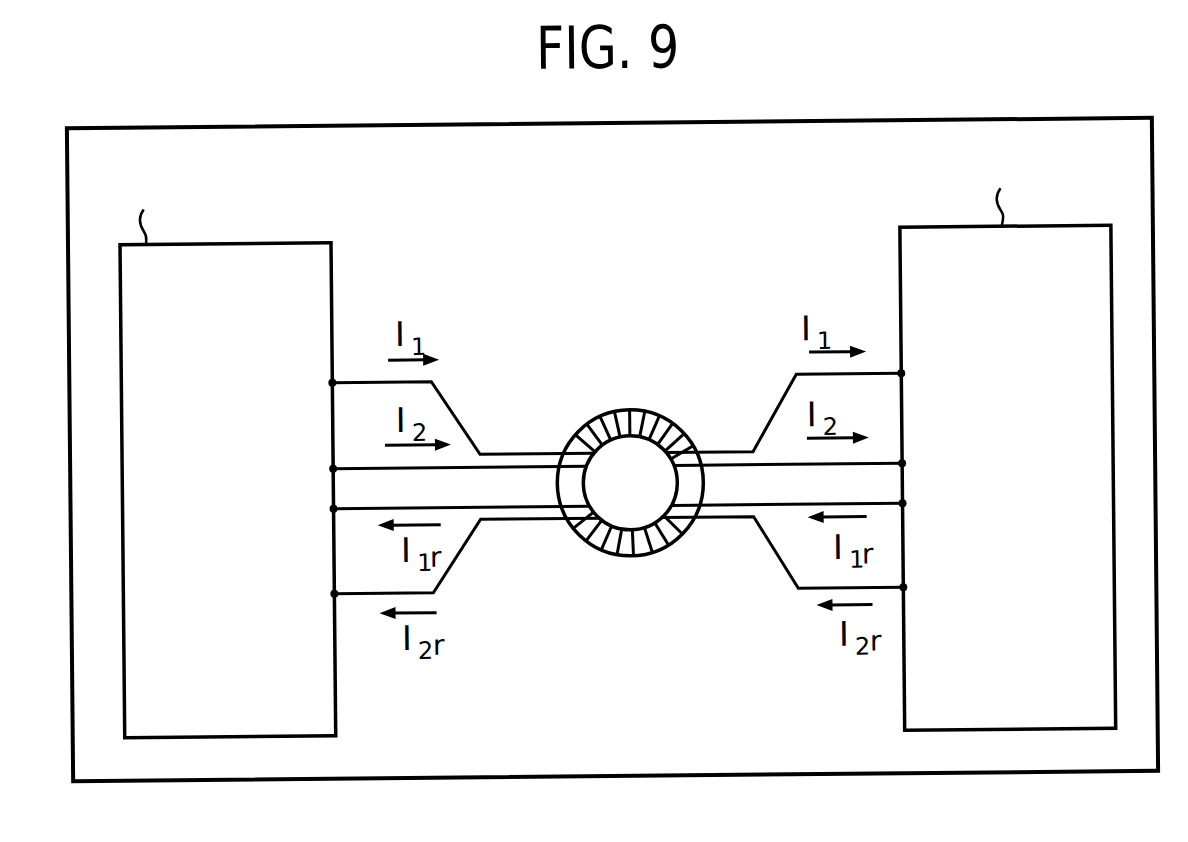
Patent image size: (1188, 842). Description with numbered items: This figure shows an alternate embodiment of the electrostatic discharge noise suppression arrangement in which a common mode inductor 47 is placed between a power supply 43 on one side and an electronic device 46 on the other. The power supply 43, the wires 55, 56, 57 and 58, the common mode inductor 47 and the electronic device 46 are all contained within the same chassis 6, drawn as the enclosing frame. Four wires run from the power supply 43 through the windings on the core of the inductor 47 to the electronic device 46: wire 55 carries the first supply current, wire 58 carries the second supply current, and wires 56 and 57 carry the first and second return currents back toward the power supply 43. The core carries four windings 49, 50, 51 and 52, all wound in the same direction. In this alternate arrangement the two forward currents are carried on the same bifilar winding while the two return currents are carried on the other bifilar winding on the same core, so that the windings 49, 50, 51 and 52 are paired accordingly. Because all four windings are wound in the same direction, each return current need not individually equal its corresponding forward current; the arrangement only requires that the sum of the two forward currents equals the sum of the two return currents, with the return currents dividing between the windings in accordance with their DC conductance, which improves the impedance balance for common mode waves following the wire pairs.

The chassis 6 is at (947, 776).
The power supply module 43 is at (301, 240).
The electronic device 46 is at (1098, 230).
The common mode inductor 47 is at (618, 468).
The winding 49 is at (580, 432).
The winding 50 is at (589, 424).
The winding 51 is at (580, 534).
The winding 52 is at (583, 538).
The wire 55 is at (352, 380).
The wire 56 is at (358, 506).
The wire 57 is at (358, 591).
The wire 58 is at (358, 466).